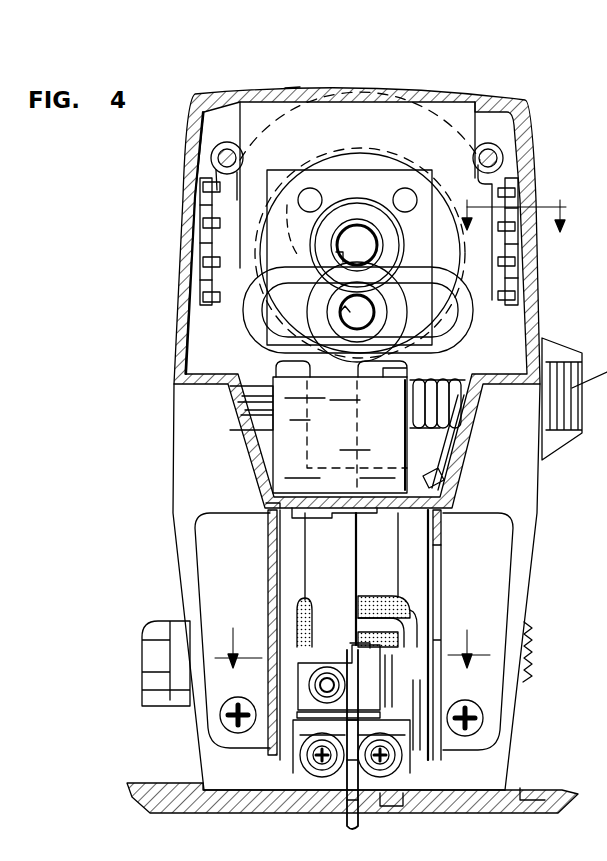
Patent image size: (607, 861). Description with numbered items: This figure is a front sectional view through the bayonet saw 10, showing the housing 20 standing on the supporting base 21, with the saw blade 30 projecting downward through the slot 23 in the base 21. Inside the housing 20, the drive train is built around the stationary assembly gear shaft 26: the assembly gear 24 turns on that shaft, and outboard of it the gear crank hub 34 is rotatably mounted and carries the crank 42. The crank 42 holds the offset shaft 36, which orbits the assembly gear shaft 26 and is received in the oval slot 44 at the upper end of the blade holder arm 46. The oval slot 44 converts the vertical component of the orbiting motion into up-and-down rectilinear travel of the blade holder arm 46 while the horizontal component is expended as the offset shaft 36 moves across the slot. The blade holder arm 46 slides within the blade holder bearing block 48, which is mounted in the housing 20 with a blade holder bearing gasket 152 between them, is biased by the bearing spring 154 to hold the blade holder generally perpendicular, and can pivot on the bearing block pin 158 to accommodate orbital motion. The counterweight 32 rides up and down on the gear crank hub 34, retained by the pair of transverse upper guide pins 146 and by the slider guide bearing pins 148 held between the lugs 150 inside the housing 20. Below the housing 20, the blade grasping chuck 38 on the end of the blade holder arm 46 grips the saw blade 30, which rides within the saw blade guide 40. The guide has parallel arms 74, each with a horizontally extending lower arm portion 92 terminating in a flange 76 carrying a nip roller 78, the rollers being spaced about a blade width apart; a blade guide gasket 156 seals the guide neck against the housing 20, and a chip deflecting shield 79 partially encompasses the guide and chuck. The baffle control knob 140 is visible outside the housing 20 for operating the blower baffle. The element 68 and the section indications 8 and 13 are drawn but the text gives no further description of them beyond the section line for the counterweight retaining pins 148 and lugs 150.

The bayonet saw 10 is at (148, 228).
The housing 20 is at (160, 432).
The supporting base 21 is at (570, 798).
The slot 23 is at (452, 790).
The assembly gear 24 is at (281, 100).
The assembly gear shaft 26 is at (356, 236).
The saw blade 30 is at (365, 788).
The counterweight 32 is at (433, 116).
The gear crank hub 34 is at (353, 160).
The offset shaft 36 is at (258, 303).
The blade grasping chuck 38 is at (310, 679).
The saw blade guide 40 is at (226, 758).
The crank 42 is at (378, 182).
The oval slot 44 is at (262, 302).
The blade holder arm 46 is at (320, 538).
The blade holder bearing block 48 is at (282, 462).
The serrated grip 68 is at (533, 656).
The arms 74 is at (294, 653).
The flange 76 is at (293, 738).
The nip roller 78 is at (378, 730).
The chip deflecting shield 79 is at (266, 572).
The lower arm portion 92 is at (290, 726).
The baffle control knob 140 is at (165, 659).
The upper guide pins 146 is at (211, 158).
The slider guide bearing pins 148 is at (212, 244).
The lugs 150 is at (214, 190).
The blade holder bearing gasket 152 is at (270, 500).
The bearing spring 154 is at (428, 406).
The blade guide gasket 156 is at (368, 608).
The bearing block pin 158 is at (258, 398).
The section line 8- 8 is at (352, 633).
The section line 13- 13 is at (516, 233).